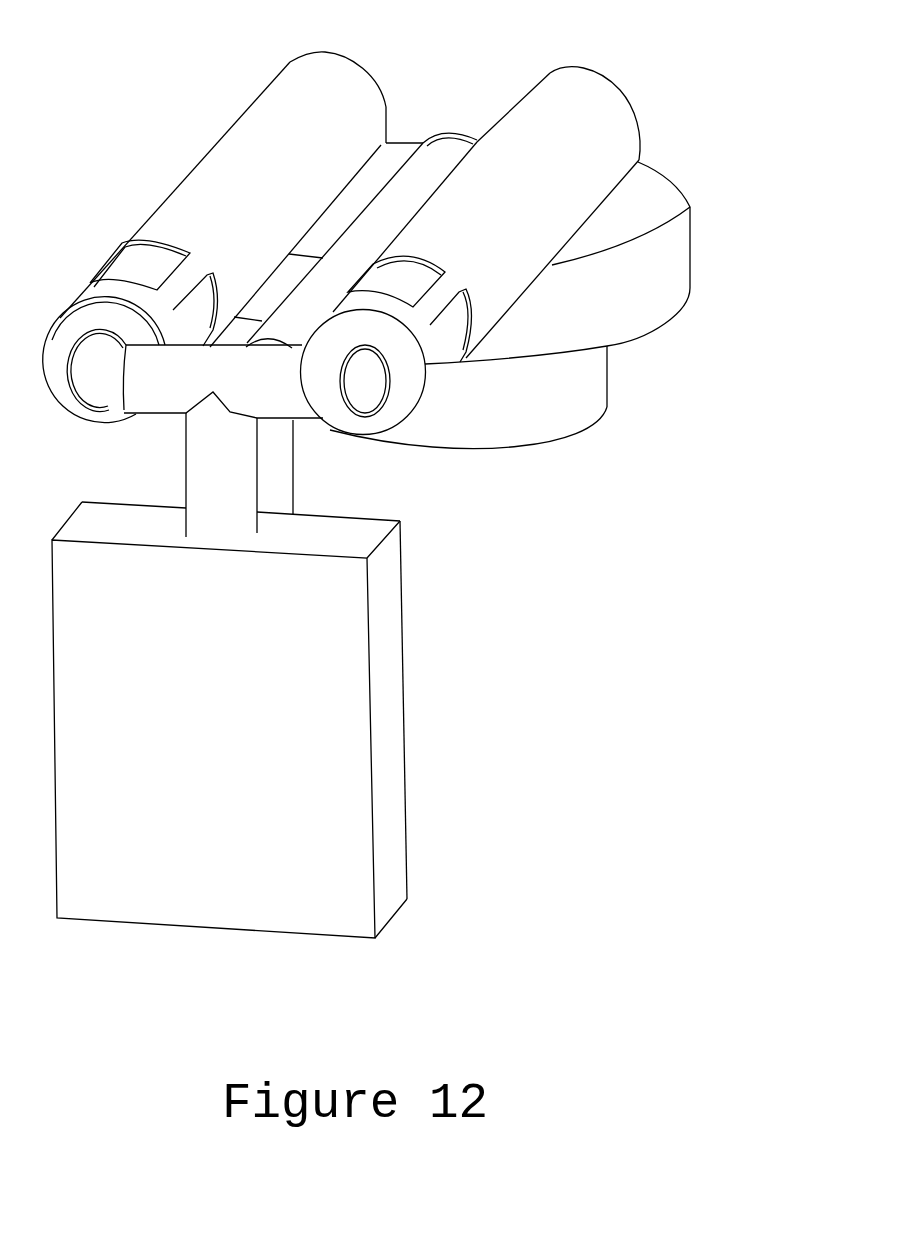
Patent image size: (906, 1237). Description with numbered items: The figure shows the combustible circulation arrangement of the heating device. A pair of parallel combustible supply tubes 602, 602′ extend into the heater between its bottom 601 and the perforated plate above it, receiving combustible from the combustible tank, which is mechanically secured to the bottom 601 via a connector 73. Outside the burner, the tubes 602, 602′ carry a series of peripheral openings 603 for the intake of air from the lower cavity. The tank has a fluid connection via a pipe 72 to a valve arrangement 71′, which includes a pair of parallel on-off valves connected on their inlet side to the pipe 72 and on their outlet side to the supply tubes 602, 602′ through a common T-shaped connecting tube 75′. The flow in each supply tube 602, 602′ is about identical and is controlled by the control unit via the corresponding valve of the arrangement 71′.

The tube 602′ is at (268, 107).
The peripheral openings 603 is at (155, 268).
The conduit 72 is at (445, 150).
The tube 602 is at (603, 117).
The bottom 601 is at (645, 305).
The connector 73 is at (592, 383).
The common T-shaped connecting tube 75′ is at (222, 423).
The valve arrangement 71′ is at (384, 797).